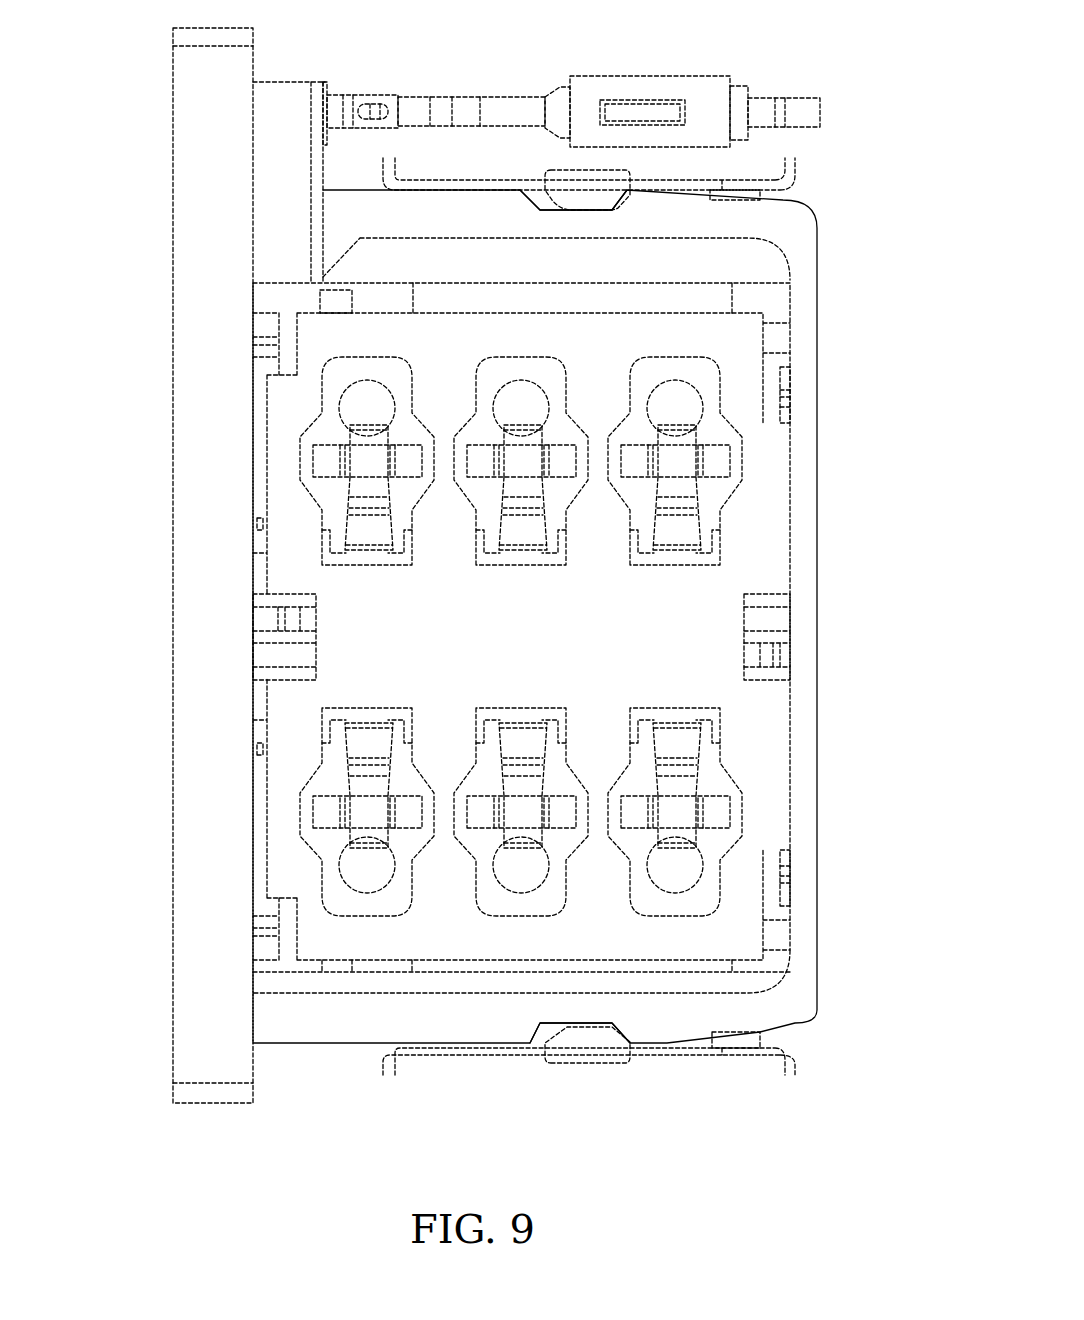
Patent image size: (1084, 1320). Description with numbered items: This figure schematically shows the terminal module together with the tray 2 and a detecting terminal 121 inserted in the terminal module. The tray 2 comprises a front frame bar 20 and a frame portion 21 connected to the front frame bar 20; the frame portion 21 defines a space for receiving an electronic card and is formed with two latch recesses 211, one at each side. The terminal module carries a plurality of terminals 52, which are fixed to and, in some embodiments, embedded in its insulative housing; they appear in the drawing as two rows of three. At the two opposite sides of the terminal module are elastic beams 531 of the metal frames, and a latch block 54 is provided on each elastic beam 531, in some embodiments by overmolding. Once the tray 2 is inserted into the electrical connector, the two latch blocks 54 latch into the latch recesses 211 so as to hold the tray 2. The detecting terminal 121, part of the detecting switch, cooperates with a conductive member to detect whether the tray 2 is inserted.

The tray 2 is at (160, 630).
The front frame bar 20 is at (185, 908).
The frame portion 21 is at (828, 447).
The detecting terminal 121 is at (347, 87).
The latch recess 211 is at (536, 197).
The terminal 52 is at (707, 512).
The latch block 54 is at (590, 183).
The elastic beam 531 is at (698, 185).